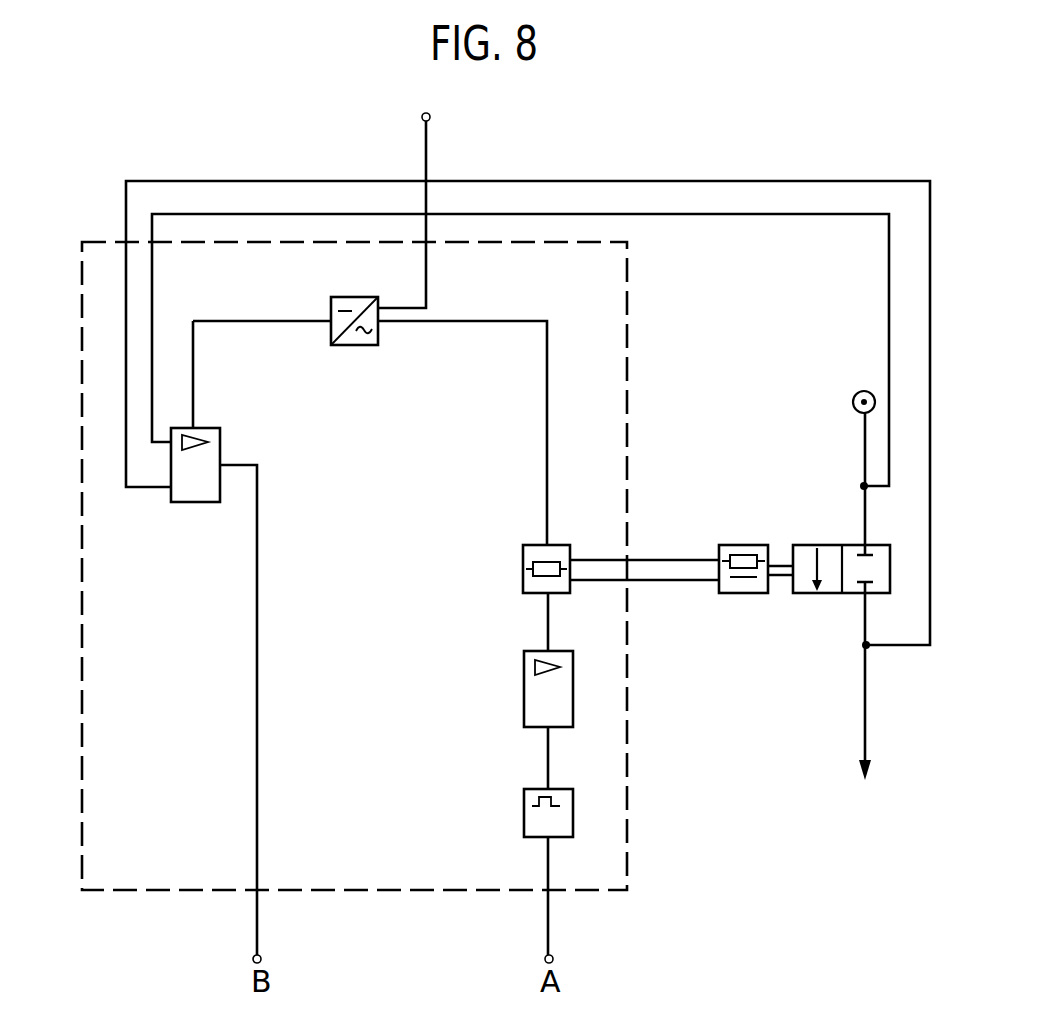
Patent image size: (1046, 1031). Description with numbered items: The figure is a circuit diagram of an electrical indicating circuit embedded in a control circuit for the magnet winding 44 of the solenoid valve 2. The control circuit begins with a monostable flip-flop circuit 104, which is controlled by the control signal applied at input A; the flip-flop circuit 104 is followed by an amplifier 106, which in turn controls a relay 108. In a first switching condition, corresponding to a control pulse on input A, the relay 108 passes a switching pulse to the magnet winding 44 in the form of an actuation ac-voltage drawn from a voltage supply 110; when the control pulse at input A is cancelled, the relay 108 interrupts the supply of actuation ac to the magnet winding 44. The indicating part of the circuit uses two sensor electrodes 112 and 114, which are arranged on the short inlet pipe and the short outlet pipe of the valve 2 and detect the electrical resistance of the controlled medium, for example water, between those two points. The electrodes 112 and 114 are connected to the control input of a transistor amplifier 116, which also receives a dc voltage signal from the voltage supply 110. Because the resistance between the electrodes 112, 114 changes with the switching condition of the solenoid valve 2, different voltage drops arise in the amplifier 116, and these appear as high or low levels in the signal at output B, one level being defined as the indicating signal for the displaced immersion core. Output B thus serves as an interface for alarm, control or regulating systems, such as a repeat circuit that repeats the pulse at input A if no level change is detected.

The solenoid valve 2 is at (804, 565).
The magnet winding 44 is at (748, 588).
The monostable flip-flop circuit 104 is at (532, 821).
The amplifier 106 is at (528, 692).
The relay 108 is at (526, 582).
The voltage supply 110 is at (355, 343).
The sensor electrode 112 is at (862, 486).
The sensor electrode 114 is at (864, 645).
The transistor amplifier 116 is at (197, 488).